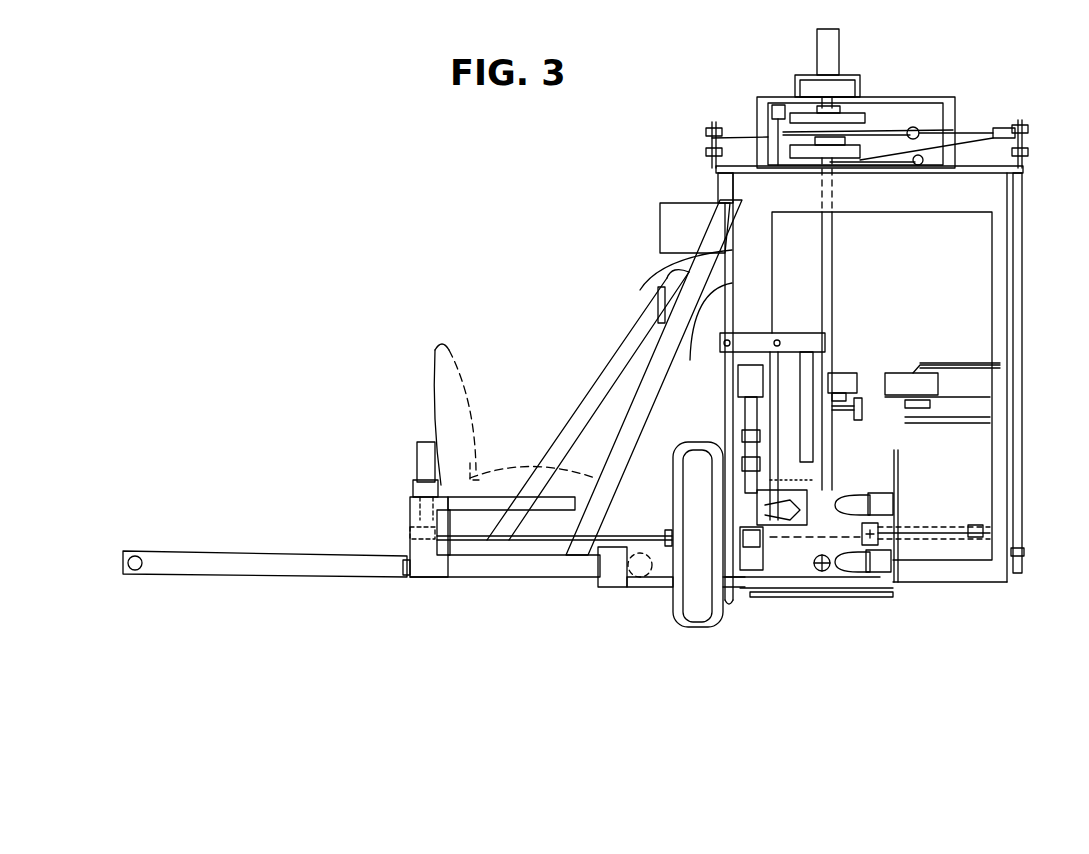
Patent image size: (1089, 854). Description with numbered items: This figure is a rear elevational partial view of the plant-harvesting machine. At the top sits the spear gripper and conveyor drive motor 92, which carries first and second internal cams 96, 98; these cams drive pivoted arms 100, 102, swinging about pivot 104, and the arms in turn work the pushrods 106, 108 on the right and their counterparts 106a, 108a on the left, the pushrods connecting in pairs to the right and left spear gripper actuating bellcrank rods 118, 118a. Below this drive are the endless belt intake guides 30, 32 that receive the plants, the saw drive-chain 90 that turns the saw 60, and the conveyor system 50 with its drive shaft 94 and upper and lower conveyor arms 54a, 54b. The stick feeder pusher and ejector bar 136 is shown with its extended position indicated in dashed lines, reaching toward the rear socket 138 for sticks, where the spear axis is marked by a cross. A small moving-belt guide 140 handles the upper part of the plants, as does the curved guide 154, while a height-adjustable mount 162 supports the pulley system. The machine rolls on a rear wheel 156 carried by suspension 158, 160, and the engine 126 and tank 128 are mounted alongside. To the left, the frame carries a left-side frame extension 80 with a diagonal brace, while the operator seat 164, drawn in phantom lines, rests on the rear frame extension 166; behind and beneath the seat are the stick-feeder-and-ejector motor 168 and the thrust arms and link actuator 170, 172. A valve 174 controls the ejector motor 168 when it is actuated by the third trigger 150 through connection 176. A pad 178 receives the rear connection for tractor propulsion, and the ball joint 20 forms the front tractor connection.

The ball joint 20 is at (135, 571).
The endless belt intake guide 30 is at (890, 380).
The endless belt intake guide 32 is at (832, 373).
The conveyor system 50 is at (782, 495).
The upper conveyor arm 54a is at (882, 495).
The lower conveyor arm 54b is at (882, 590).
The saw 60 is at (795, 595).
The left-side frame extension 80 is at (276, 578).
The saw drive-chain 90 is at (806, 480).
The spear gripper and conveyor drive motor 92 is at (815, 45).
The drive shaft 94 is at (833, 262).
The first internal cam 96 is at (858, 115).
The second internal cam 98 is at (843, 160).
The pivoted arm 100 is at (898, 128).
The pivoted arm 102 is at (880, 170).
The pivot 104 is at (760, 103).
The pushrod 106 is at (955, 135).
The pushrod 106a is at (745, 140).
The pushrod 108 is at (1023, 145).
The pushrod 108a is at (712, 150).
The spear gripper actuating bellcrank rod 118 is at (1022, 190).
The spear gripper actuating bellcrank rod 118a is at (718, 185).
The engine 126 is at (668, 273).
The tank 128 is at (660, 233).
The stick feeder pusher and ejector bar 136 is at (888, 518).
The rear socket 138 is at (880, 545).
The upper-plant small moving-belt guide 140 is at (862, 410).
The third trigger 150 is at (880, 598).
The curved guide 154 is at (905, 372).
The rear wheel 156 is at (675, 462).
The suspension 158 is at (748, 575).
The suspension 160 is at (750, 408).
The height-adjustable mount 162 is at (771, 346).
The operator seat 164 is at (455, 356).
The rear frame extension 166 is at (410, 505).
The stick-feeder-and-ejector motor 168 is at (417, 462).
The thrust arm and link actuator 170 is at (410, 540).
The thrust arm and link actuator 172 is at (441, 566).
The valve 174 is at (613, 590).
The connection 176 is at (661, 590).
The pad 178 is at (404, 575).